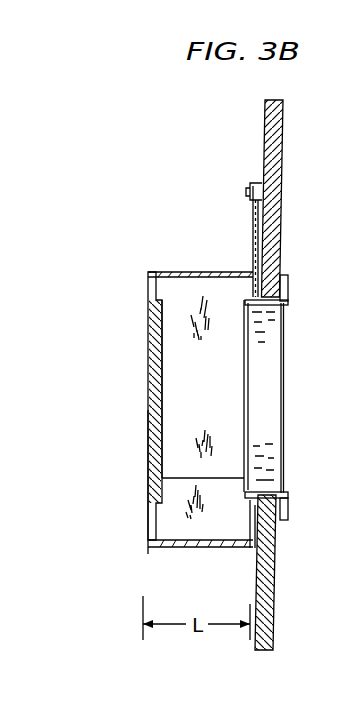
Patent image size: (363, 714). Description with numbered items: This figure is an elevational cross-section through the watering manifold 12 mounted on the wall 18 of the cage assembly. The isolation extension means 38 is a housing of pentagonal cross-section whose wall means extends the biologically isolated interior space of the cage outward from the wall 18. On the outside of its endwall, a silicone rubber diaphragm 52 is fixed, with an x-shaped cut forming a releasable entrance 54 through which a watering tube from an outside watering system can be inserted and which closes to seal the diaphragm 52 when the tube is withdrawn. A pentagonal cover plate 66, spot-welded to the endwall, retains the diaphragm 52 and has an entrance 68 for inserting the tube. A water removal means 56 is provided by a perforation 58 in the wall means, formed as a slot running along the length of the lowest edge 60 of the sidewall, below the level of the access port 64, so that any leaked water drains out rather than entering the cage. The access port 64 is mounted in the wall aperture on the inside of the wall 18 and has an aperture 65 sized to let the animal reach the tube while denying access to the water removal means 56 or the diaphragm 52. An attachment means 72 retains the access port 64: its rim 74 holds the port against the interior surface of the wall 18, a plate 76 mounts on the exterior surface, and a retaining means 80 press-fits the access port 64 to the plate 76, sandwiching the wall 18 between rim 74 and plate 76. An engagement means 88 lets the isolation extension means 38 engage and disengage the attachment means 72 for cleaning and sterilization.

The watering manifold 12 is at (112, 640).
The wall 18 is at (264, 136).
The isolation extension means 38 is at (148, 282).
The diaphragm 52 is at (162, 404).
The releasable entrance 54 is at (150, 424).
The water removal means 56 is at (188, 552).
The perforation 58 is at (240, 549).
The lowest edge 60 is at (148, 554).
The access port 64 is at (268, 451).
The aperture 65 is at (288, 397).
The cover plate 66 is at (148, 346).
The entrance 68 is at (150, 407).
The attachment means 72 is at (277, 324).
The rim 74 is at (288, 282).
The plate 76 is at (253, 212).
The retaining means 80 is at (288, 302).
The engagement means 88 is at (250, 197).